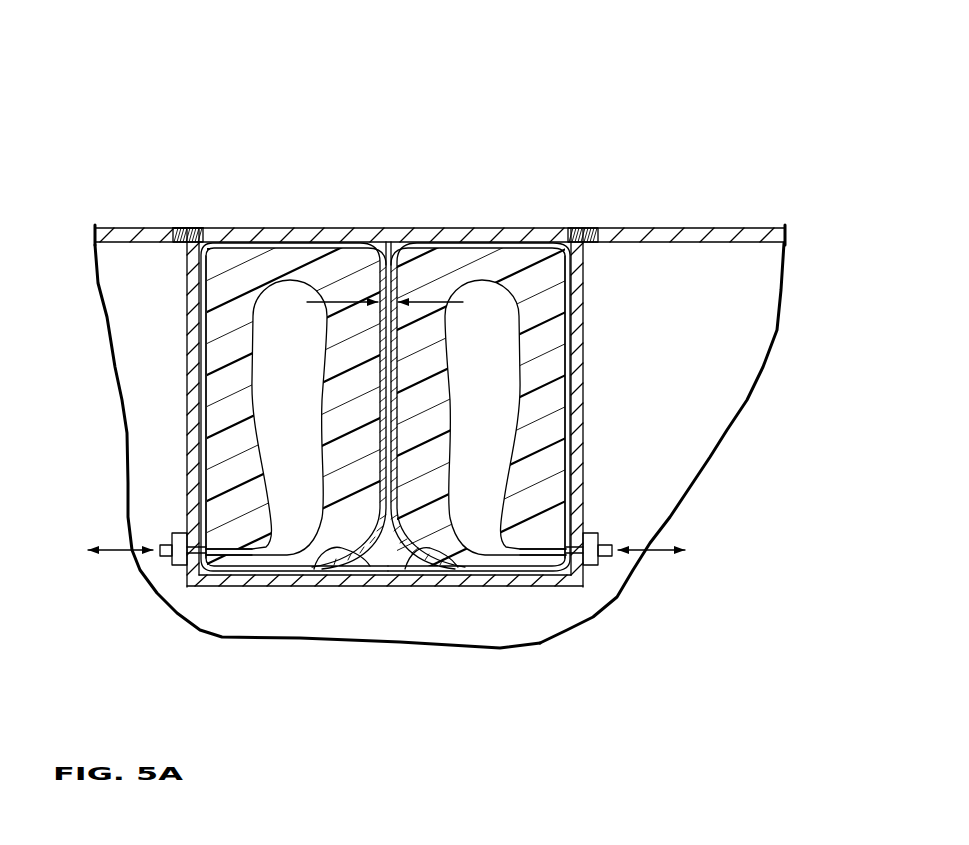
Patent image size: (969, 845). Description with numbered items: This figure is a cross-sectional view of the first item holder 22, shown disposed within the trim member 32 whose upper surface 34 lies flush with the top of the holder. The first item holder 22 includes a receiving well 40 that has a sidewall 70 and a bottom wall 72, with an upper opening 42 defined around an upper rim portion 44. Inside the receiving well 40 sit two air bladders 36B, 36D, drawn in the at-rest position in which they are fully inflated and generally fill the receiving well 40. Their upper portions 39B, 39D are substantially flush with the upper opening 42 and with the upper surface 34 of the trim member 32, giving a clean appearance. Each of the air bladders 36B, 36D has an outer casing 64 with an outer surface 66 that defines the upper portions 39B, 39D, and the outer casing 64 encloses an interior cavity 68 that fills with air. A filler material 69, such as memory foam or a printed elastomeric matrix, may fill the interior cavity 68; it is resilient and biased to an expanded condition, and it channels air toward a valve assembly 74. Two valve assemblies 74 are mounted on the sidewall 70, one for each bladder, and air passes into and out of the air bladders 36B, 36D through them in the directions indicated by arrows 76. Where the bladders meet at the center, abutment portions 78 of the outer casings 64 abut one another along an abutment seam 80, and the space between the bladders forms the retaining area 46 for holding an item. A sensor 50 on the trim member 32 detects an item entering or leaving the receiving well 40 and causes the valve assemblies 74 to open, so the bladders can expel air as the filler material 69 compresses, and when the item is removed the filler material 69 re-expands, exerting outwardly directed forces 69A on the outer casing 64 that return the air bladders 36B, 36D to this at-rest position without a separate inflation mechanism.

The first item holder 22 is at (346, 125).
The trim member 32 is at (733, 223).
The upper surface 34 is at (683, 228).
The air bladder 36B is at (468, 220).
The air bladder 36D is at (319, 218).
The upper portion 39B is at (493, 235).
The upper portion 39D is at (290, 240).
The receiving well 40 is at (600, 399).
The upper opening 42 is at (208, 230).
The upper rim portion 44 is at (180, 228).
The retaining area 46 is at (387, 253).
The sensor 50 is at (197, 230).
The outer casing 64 is at (317, 560).
The outer surface 66 is at (367, 565).
The interior cavity 68 is at (278, 338).
The filler material 69 is at (240, 282).
The outwardly directed forces 69A is at (363, 300).
The sidewall 70 is at (190, 408).
The bottom wall 72 is at (385, 590).
The valve assembly 74 is at (176, 525).
The arrows 76 is at (122, 548).
The abutment portion 78 is at (293, 372).
The abutment seam 80 is at (398, 240).